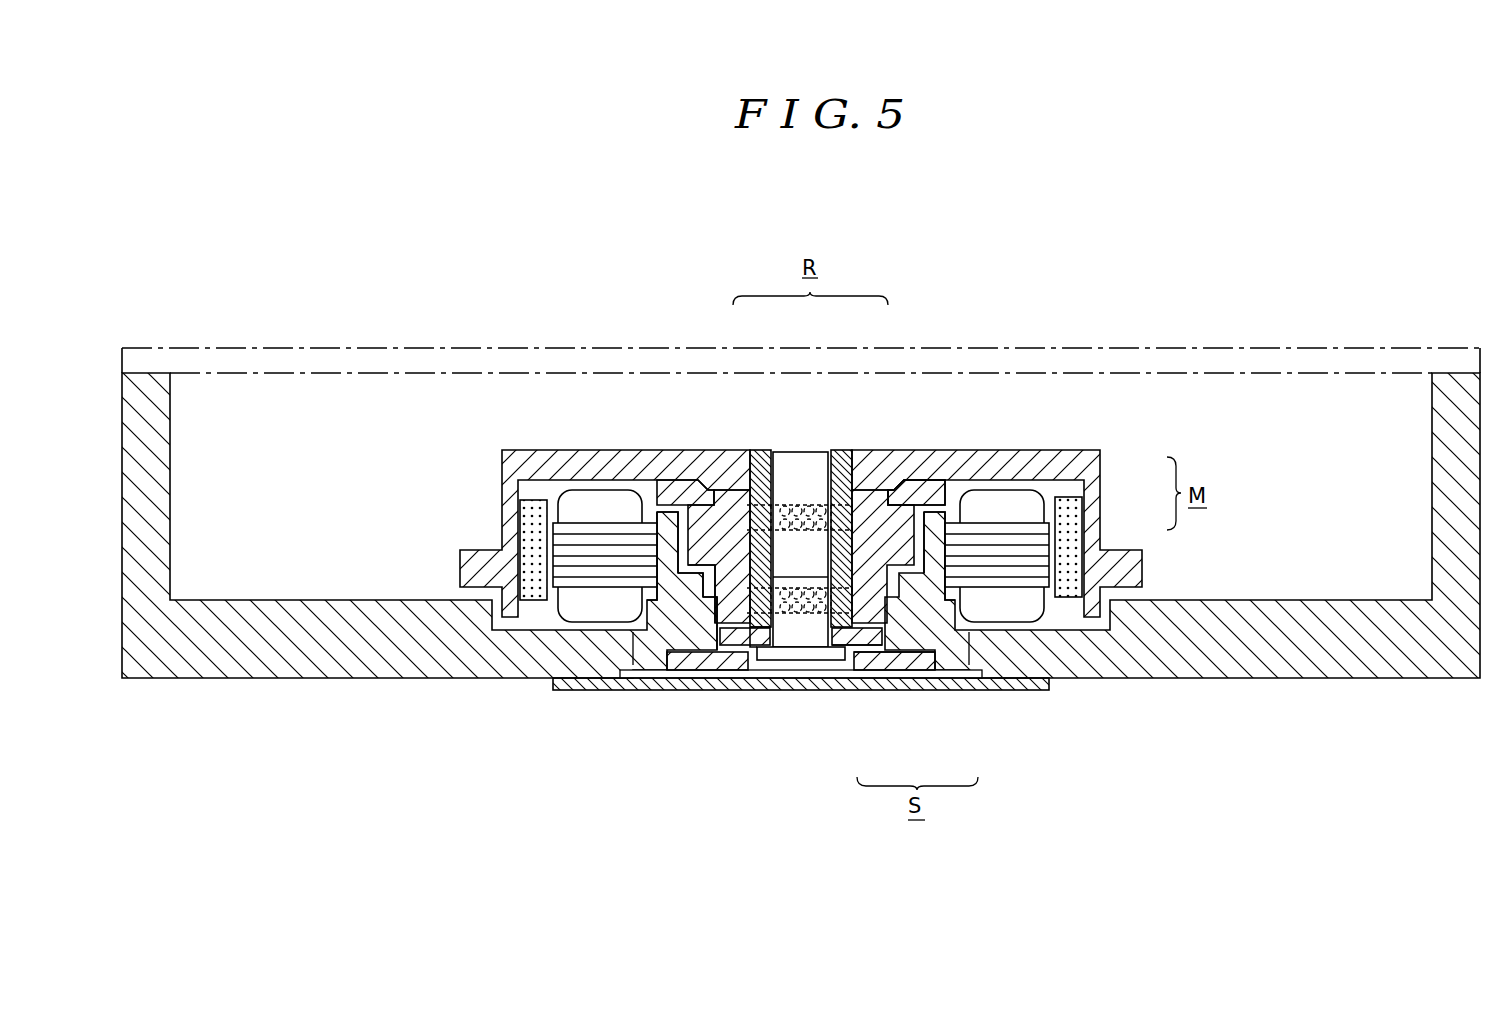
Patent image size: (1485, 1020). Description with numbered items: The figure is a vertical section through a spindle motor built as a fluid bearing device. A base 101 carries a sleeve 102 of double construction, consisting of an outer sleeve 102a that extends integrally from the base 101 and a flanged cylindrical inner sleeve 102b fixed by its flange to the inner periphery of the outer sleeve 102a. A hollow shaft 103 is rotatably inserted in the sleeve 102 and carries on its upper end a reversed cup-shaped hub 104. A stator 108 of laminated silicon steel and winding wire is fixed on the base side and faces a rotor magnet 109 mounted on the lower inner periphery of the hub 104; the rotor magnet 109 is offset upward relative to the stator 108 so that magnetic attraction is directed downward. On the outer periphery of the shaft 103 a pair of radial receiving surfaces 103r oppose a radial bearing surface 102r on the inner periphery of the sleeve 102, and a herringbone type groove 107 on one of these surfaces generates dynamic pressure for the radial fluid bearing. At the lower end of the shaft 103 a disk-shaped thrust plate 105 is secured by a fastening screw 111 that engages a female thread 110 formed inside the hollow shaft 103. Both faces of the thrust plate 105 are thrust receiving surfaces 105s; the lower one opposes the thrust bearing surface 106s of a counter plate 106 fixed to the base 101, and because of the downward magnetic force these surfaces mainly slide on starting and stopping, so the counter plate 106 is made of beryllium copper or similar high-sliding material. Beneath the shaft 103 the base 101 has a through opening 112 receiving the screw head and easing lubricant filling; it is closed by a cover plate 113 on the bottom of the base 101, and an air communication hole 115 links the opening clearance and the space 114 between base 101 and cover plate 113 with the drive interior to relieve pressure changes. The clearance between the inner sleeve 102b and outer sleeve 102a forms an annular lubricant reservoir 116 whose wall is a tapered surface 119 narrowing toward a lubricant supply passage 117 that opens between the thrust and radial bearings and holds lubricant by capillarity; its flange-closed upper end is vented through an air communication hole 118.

The base 101 is at (300, 608).
The sleeve 102 is at (1025, 305).
The outer sleeve 102a is at (934, 540).
The inner sleeve 102b is at (888, 498).
The radial bearing surface 102r is at (786, 512).
The shaft 103 is at (838, 462).
The radial receiving surface 103r is at (757, 505).
The hub 104 is at (512, 478).
The thrust plate 105 is at (855, 640).
The thrust receiving surface 105s is at (877, 662).
The counter plate 106 is at (893, 630).
The thrust bearing surface 106s is at (925, 662).
The herringbone type groove 107 is at (807, 505).
The stator 108 is at (1025, 505).
The rotor magnet 109 is at (1077, 523).
The female thread 110 is at (778, 627).
The fastening screw 111 is at (812, 655).
The through opening 112 is at (758, 640).
The cover plate 113 is at (1012, 690).
The space 114 is at (727, 662).
The air communication hole 115 is at (657, 602).
The lubricant reservoir 116 is at (690, 576).
The lubricant supply passage 117 is at (714, 562).
The air communication hole 118 is at (700, 520).
The tapered surface 119 is at (716, 640).